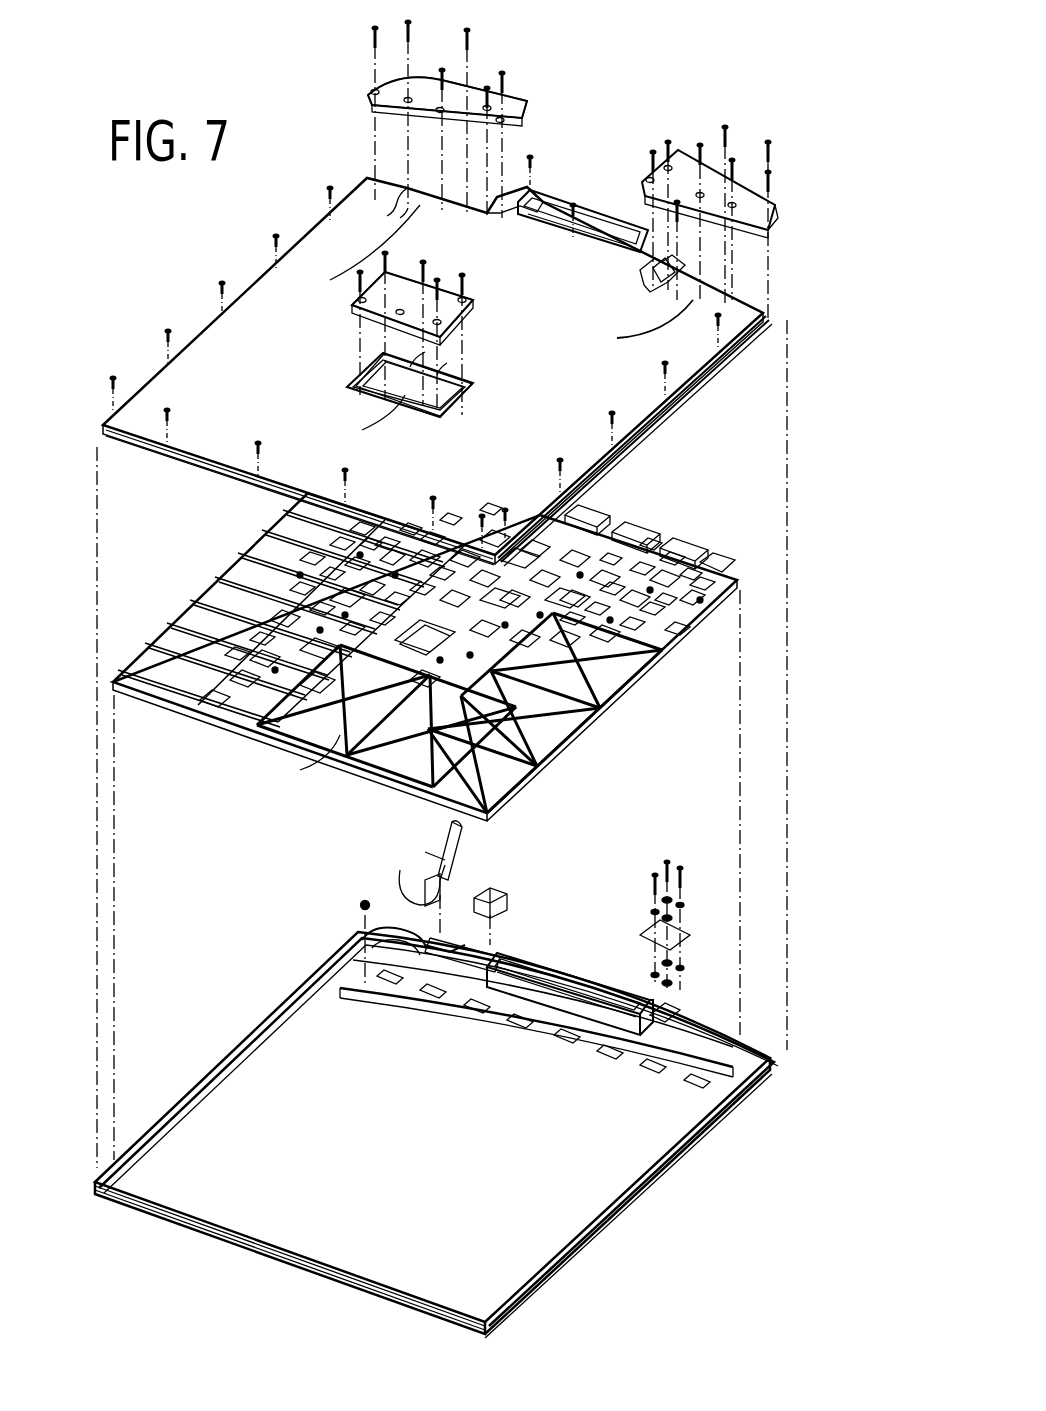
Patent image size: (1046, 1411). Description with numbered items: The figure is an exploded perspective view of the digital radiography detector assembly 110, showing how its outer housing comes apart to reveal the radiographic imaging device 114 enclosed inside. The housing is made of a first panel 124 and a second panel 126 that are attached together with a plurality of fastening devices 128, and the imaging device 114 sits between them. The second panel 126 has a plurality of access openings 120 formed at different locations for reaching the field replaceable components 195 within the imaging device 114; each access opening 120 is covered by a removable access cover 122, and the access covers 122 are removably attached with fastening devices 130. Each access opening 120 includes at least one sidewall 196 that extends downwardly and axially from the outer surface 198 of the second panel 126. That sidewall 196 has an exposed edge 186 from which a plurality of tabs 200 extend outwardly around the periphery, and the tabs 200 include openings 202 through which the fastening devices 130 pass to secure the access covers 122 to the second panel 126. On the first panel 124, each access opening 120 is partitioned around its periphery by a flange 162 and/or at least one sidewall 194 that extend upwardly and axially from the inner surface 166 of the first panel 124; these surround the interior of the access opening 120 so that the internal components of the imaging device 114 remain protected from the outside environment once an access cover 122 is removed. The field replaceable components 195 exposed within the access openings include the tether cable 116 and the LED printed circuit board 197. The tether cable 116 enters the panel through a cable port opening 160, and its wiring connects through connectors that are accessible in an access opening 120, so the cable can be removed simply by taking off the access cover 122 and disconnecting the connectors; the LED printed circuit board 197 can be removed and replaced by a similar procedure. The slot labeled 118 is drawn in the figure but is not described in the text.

The digital radiography detector assembly 110 is at (614, 52).
The radiographic imaging device 114 is at (683, 635).
The tether cable 116 is at (458, 840).
The slot channel 118 is at (605, 220).
The access opening 120 is at (397, 160).
The access cover 122 is at (425, 85).
The first panel 124 is at (436, 1133).
The second panel 126 is at (680, 365).
The fastening devices 128 is at (165, 325).
The fastening devices 130 is at (465, 272).
The cable port opening 160 is at (475, 75).
The flange 162 is at (378, 910).
The inner surface 166 is at (595, 1220).
The exposed edge 186 is at (388, 178).
The sidewall 194 is at (390, 1000).
The field replaceable components 195 is at (325, 765).
The sidewall 196 is at (465, 205).
The LED printed circuit board 197 is at (652, 930).
The outer surface 198 is at (155, 390).
The tabs 200 is at (491, 322).
The openings 202 is at (395, 208).